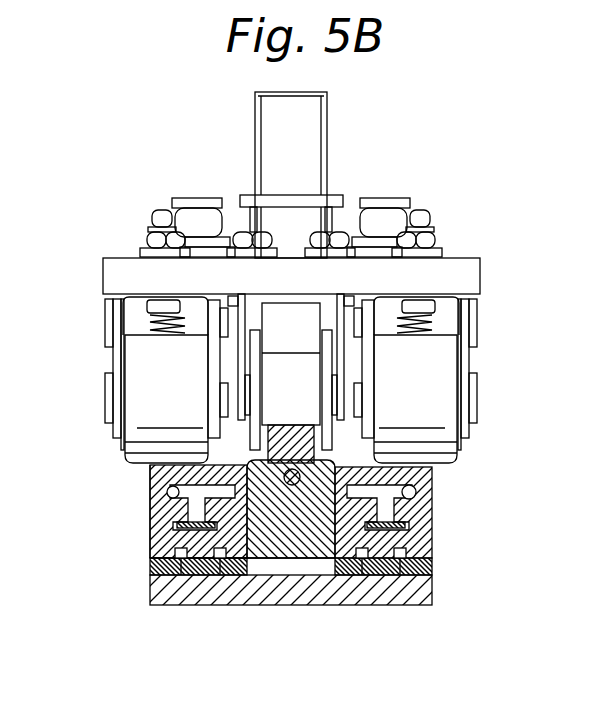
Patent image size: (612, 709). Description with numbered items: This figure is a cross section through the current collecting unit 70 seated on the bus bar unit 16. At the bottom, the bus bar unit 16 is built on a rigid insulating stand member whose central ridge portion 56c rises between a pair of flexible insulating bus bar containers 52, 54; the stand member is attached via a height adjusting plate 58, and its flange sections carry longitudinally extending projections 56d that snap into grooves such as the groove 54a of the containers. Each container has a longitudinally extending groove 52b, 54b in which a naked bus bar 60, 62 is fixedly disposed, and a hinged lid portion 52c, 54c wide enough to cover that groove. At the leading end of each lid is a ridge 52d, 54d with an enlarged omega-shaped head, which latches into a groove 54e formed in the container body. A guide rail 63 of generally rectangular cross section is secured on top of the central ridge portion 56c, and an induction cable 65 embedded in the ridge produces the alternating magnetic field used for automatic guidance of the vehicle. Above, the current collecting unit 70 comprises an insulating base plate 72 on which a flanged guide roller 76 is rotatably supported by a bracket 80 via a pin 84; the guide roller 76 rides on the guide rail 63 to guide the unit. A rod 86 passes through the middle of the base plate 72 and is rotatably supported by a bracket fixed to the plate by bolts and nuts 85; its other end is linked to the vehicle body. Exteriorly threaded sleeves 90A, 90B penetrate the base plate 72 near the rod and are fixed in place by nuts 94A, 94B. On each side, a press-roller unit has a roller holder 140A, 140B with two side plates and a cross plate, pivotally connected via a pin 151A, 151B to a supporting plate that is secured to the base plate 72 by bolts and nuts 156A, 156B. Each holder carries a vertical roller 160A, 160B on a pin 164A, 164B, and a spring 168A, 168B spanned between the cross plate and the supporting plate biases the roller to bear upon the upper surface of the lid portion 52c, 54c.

The bus bar unit 16 is at (438, 573).
The bus bar container 52 is at (431, 552).
The longitudinally extending groove 52b is at (401, 522).
The lid portion 52c is at (412, 486).
The longitudinally extending ridge 52d is at (386, 505).
The bus bar container 54 is at (168, 532).
The longitudinally extending groove 54a is at (182, 578).
The longitudinally extending groove 54b is at (165, 520).
The lid portion 54c is at (150, 473).
The longitudinally extending ridge 54d is at (167, 493).
The longitudinally extending groove 54e is at (196, 505).
The central ridge portion 56c is at (273, 507).
The longitudinally extending projection 56d is at (366, 553).
The height adjusting plate 58 is at (158, 593).
The naked bus bar 60 is at (417, 534).
The naked bus bar 62 is at (180, 552).
The guide rail 63 is at (295, 430).
The induction cable 65 is at (292, 486).
The current collecting unit 70 is at (488, 185).
The base plate 72 is at (481, 275).
The guide roller 76 is at (290, 360).
The bracket 80 is at (170, 290).
The pin 84 is at (238, 370).
The bolts and nuts 85 is at (198, 207).
The rod 86 is at (268, 210).
The exteriorly threaded sleeve 90A is at (384, 210).
The exteriorly threaded sleeve 90B is at (160, 213).
The nut 94A is at (420, 212).
The nut 94B is at (156, 240).
The roller holder 140A is at (469, 355).
The roller holder 140B is at (111, 357).
The pin 151A is at (471, 305).
The pin 151B is at (108, 331).
The bolts and nuts 156A is at (440, 241).
The bolts and nuts 156B is at (150, 234).
The vertical roller 160A is at (440, 410).
The vertical roller 160B is at (143, 392).
The pin 164A is at (473, 395).
The pin 164B is at (108, 390).
The spring 168A is at (434, 322).
The spring 168B is at (148, 316).